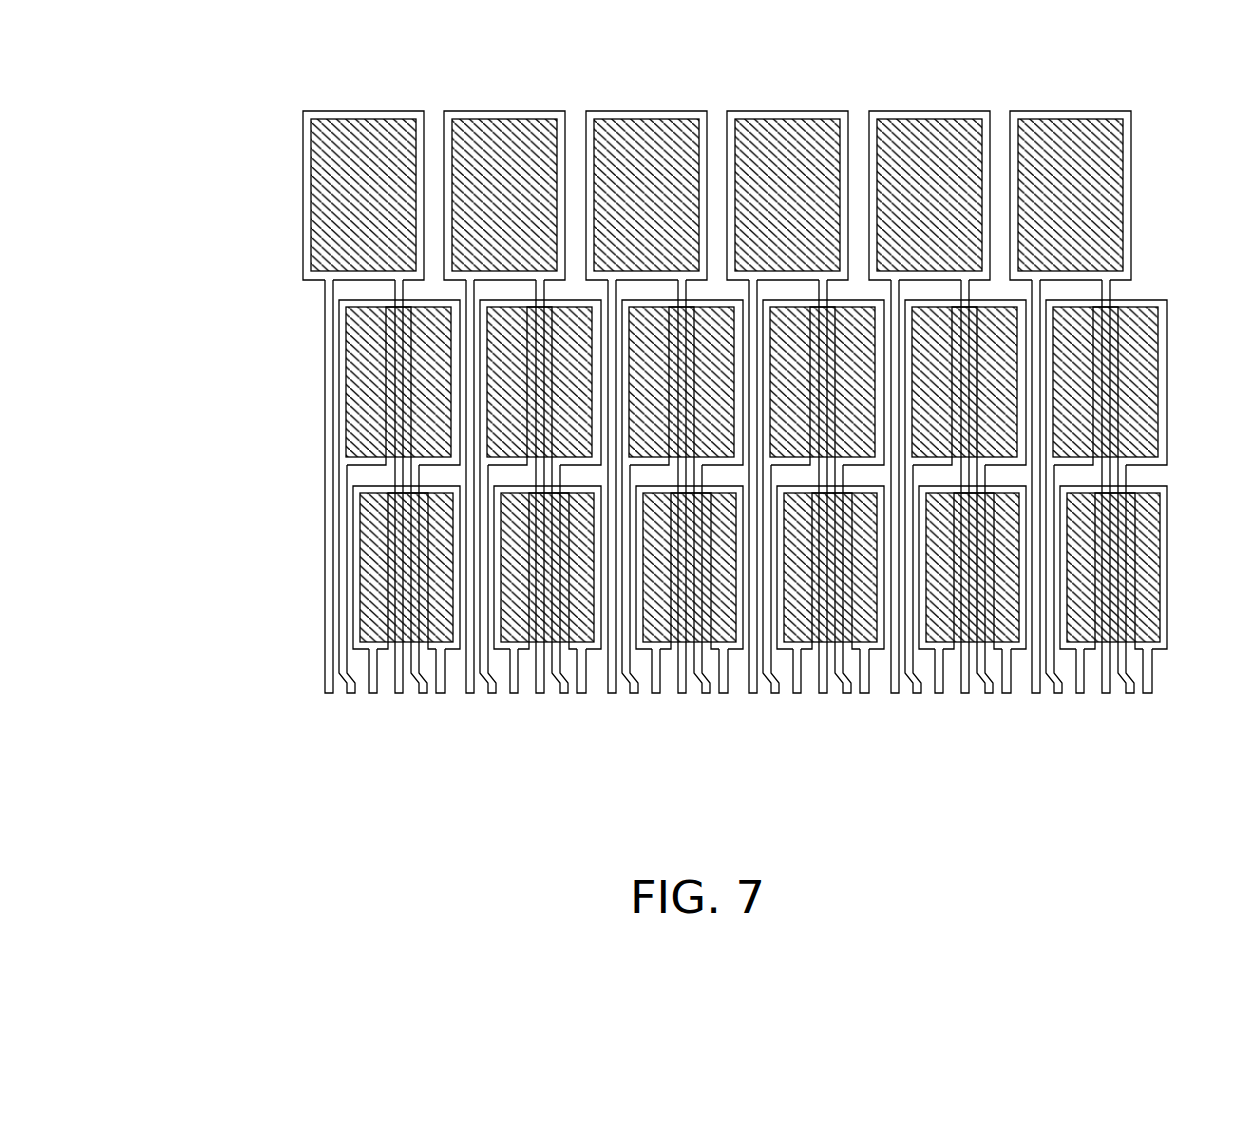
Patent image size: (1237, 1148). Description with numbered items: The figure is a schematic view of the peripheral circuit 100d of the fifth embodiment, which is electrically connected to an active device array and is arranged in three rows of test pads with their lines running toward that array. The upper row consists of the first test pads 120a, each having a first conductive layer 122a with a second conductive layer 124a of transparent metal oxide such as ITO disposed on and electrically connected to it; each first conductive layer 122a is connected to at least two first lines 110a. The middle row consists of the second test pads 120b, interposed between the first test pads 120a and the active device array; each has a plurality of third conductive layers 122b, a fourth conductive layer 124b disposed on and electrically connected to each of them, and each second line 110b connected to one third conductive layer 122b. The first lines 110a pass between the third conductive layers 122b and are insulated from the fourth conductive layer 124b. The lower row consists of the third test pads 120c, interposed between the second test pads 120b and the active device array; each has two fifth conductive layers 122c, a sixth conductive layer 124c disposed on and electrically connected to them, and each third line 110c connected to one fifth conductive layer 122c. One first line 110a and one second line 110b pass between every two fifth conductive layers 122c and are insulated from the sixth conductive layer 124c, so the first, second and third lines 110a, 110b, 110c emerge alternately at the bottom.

The peripheral circuit 100d is at (1230, 757).
The first test pad 120a is at (228, 148).
The first conductive layer 122a is at (297, 164).
The second conductive layer 124a is at (318, 200).
The second test pad 120b is at (228, 342).
The third conductive layer 122b is at (337, 355).
The fourth conductive layer 124b is at (345, 388).
The third test pad 120c is at (228, 522).
The fifth conductive layer 122c is at (350, 540).
The sixth conductive layer 124c is at (358, 574).
The first line 110a is at (320, 678).
The second line 110b is at (343, 690).
The third line 110c is at (364, 690).